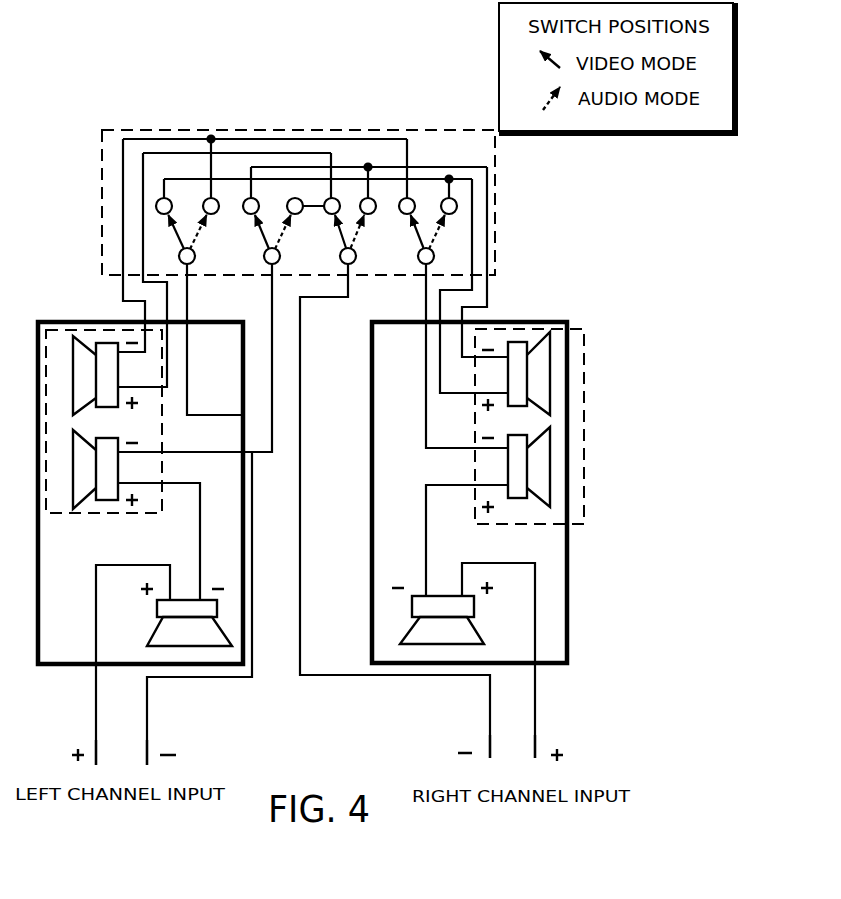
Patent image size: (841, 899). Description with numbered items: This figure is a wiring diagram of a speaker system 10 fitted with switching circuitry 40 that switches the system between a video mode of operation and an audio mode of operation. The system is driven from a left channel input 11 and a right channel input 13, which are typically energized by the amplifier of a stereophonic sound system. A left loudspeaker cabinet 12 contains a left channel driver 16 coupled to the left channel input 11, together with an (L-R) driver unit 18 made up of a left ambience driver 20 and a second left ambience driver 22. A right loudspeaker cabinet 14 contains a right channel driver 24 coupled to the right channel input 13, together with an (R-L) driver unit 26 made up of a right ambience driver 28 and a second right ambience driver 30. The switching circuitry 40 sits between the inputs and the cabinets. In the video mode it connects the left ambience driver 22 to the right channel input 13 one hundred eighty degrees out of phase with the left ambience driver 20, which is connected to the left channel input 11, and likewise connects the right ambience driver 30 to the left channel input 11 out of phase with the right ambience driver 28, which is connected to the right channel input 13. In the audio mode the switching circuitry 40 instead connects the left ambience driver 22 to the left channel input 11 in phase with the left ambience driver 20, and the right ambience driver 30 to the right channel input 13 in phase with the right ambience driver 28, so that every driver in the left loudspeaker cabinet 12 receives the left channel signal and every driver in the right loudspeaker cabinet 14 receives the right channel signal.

The speaker system 10 is at (562, 235).
The left channel input 11 is at (128, 713).
The left loudspeaker cabinet 12 is at (218, 322).
The right channel input 13 is at (507, 705).
The right loudspeaker cabinet 14 is at (395, 322).
The left channel driver 16 is at (218, 630).
The (L-R) driver unit 18 is at (55, 330).
The left ambience driver 20 is at (83, 433).
The left ambience driver 22 is at (75, 348).
The right channel driver 24 is at (468, 630).
The (R-L) driver unit 26 is at (503, 329).
The right ambience driver 28 is at (542, 430).
The right ambience driver 30 is at (542, 332).
The switching circuitry 40 is at (250, 126).